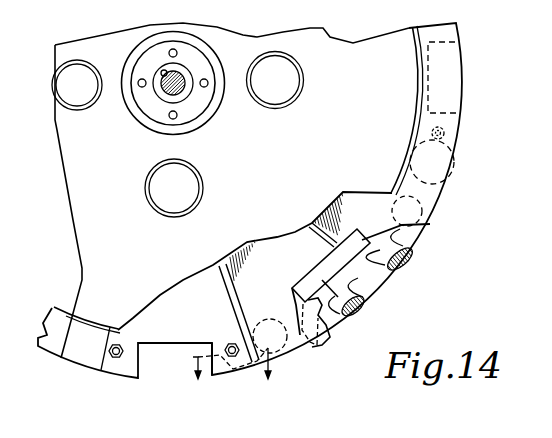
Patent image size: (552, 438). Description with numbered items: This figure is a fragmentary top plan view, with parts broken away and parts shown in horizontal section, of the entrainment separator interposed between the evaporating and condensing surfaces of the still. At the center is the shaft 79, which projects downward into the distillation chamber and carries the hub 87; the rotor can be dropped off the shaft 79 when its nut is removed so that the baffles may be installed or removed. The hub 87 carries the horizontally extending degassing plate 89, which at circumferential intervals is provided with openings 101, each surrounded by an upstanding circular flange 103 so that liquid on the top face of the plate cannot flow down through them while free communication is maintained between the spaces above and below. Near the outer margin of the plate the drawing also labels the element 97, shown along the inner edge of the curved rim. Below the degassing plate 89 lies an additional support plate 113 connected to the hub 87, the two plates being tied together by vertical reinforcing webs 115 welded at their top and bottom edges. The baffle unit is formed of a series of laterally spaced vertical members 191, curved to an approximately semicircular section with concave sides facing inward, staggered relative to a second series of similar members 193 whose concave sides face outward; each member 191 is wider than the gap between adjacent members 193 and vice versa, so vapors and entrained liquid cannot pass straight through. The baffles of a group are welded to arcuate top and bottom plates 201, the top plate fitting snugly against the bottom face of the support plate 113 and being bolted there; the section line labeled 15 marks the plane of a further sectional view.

The section line 15- 15 is at (231, 349).
The shaft 79 is at (164, 96).
The hub 87 is at (223, 67).
The degassing plate 89 is at (464, 72).
The inner flange of rim 97 is at (411, 49).
The openings 101 is at (186, 181).
The upstanding circular flange 103 is at (304, 83).
The support plate 113 is at (222, 375).
The vertical reinforcing webs 115 is at (220, 273).
The vertical members 191 is at (408, 248).
The second series of members 193 is at (323, 287).
The arcuate top and bottom plates 201 is at (330, 338).